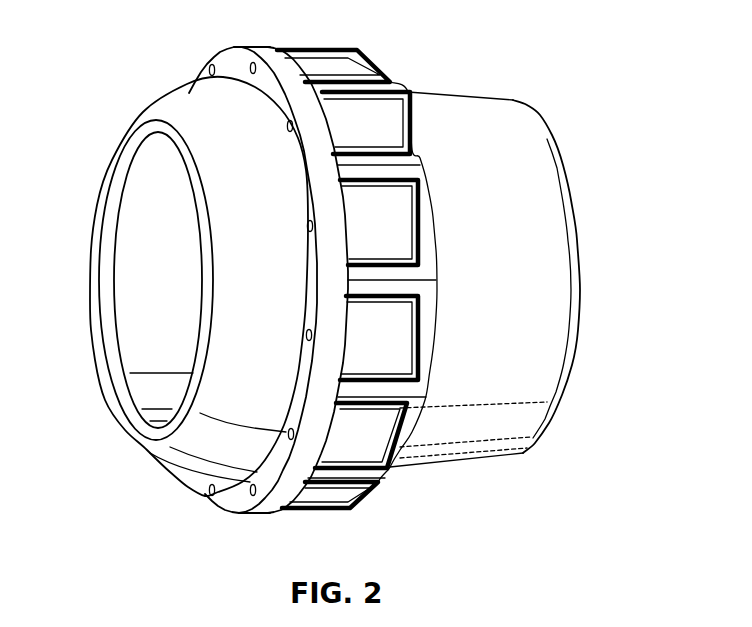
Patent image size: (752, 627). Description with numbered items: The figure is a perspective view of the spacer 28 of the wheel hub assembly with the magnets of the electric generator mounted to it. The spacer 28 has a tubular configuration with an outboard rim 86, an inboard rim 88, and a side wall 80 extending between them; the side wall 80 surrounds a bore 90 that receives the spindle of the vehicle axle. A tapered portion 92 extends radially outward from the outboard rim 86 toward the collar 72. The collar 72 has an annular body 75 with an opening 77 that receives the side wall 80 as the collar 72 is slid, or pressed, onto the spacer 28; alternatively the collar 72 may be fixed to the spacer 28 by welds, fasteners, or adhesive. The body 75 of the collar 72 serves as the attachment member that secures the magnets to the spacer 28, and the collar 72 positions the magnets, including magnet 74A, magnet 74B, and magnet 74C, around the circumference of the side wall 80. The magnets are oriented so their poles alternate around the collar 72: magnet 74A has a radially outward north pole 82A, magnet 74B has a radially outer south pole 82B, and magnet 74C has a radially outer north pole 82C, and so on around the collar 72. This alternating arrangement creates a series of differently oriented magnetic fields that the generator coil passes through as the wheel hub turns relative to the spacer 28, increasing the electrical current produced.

The spacer 28 is at (527, 215).
The collar 72 is at (233, 58).
The magnet 74A is at (337, 67).
The magnet 74B is at (357, 107).
The magnet 74C is at (382, 211).
The body 75 is at (403, 433).
The opening 77 is at (290, 170).
The side wall 80 is at (553, 342).
The radially outward north pole 82A is at (315, 63).
The radially outer south pole 82B is at (368, 133).
The radially outer north pole 82C is at (390, 242).
The outboard rim 86 is at (100, 400).
The inboard rim 88 is at (570, 382).
The bore 90 is at (133, 280).
The tapered portion 92 is at (197, 438).